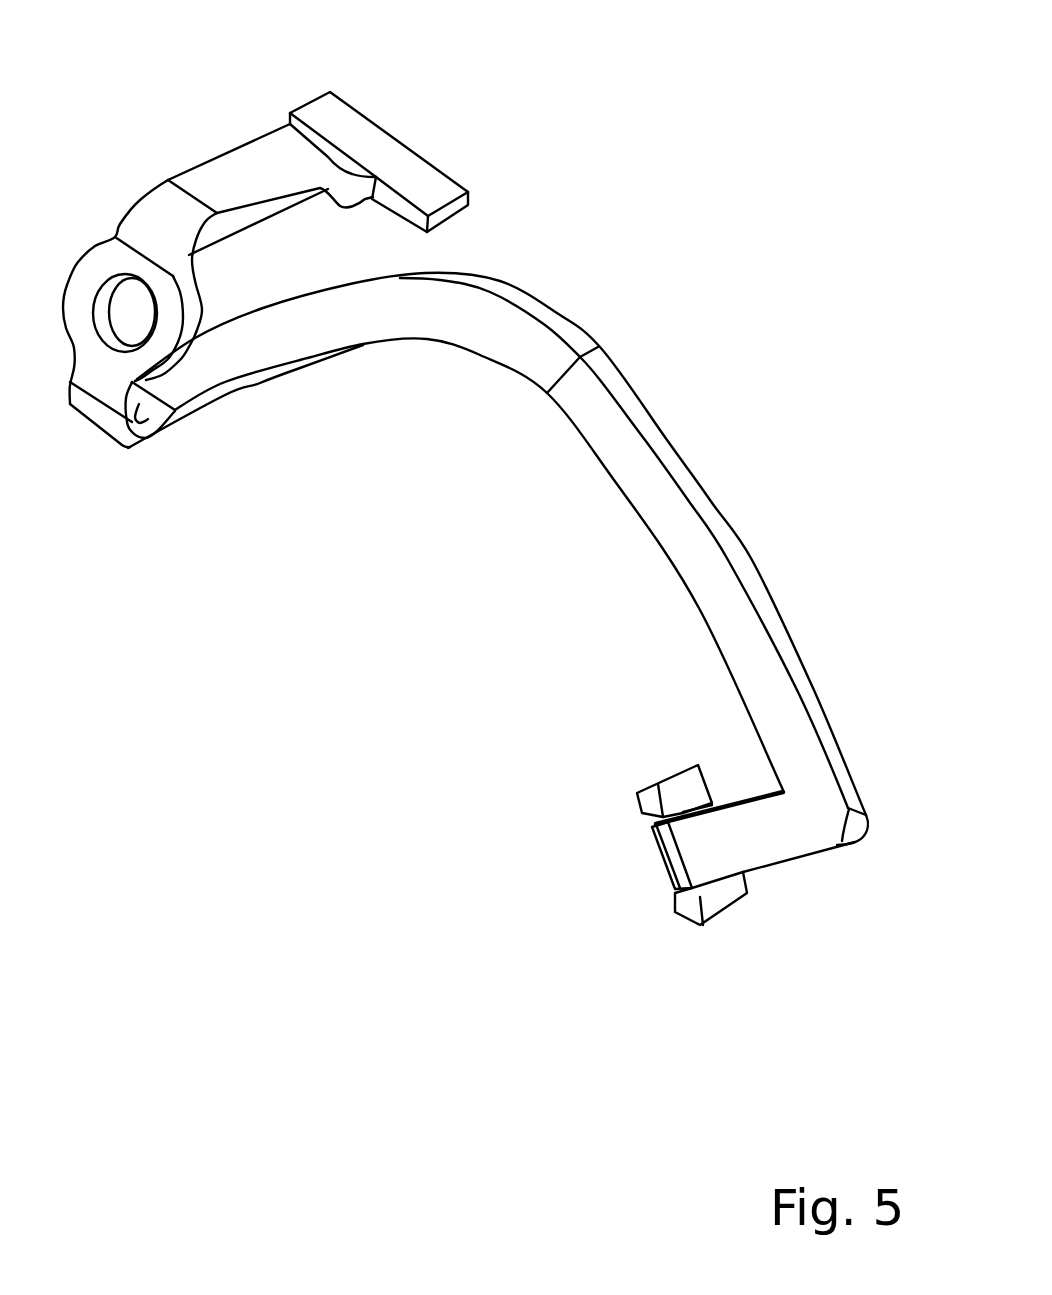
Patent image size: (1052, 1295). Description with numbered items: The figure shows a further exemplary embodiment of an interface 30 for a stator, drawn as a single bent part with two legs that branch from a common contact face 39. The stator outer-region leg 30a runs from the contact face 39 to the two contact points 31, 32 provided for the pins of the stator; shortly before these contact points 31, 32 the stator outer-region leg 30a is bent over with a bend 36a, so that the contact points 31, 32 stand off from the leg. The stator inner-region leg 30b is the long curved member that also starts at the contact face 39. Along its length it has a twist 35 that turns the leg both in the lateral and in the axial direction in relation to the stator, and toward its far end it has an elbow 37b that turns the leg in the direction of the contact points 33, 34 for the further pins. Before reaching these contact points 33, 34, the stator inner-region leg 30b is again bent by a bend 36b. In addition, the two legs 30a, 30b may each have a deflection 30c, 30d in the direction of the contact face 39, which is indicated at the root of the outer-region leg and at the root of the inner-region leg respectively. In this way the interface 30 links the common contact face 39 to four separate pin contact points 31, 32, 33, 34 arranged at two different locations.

The lever spring 30 is at (570, 78).
The stator outer-region leg 30a is at (231, 167).
The stator inner-region leg 30b is at (667, 502).
The deflection 30c is at (126, 197).
The deflection 30d is at (91, 432).
The contact point 31 is at (334, 109).
The contact point 32 is at (444, 181).
The contact point 33 is at (634, 816).
The contact point 34 is at (675, 916).
The twist 35 is at (420, 349).
The bend 36a is at (370, 217).
The bend 36b is at (655, 862).
The elbow 37b is at (810, 826).
The contact face 39 is at (145, 321).